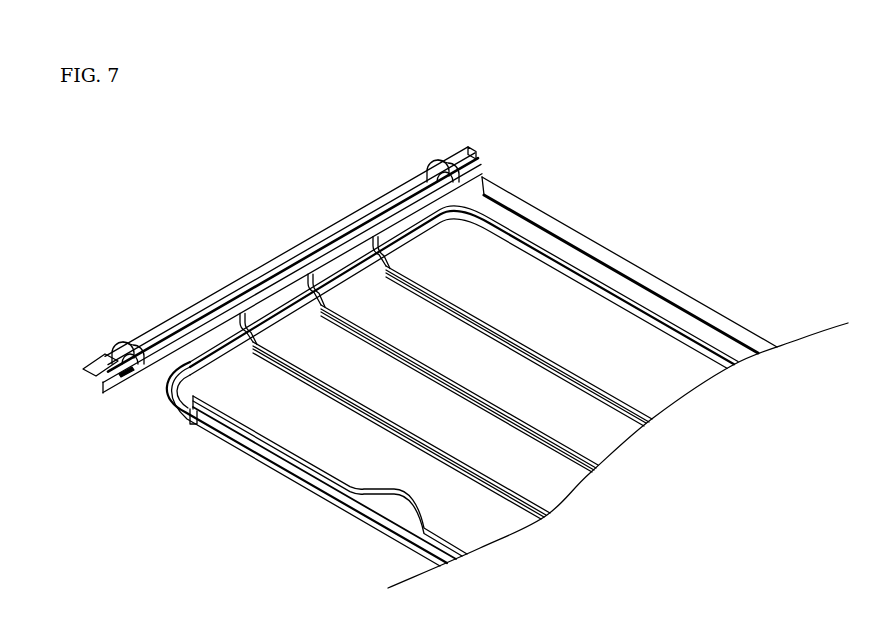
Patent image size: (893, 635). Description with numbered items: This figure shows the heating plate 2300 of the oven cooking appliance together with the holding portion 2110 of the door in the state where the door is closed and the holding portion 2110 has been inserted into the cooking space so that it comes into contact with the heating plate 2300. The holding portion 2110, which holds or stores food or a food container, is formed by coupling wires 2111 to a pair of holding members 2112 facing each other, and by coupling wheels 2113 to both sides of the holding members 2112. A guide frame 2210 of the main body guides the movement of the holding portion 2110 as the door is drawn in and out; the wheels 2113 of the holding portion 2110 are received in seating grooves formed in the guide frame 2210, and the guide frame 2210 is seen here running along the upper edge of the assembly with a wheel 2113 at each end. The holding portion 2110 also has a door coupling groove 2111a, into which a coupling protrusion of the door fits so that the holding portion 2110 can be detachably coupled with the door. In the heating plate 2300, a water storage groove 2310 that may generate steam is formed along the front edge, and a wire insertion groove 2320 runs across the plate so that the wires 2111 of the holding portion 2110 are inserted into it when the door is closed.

The holding portion 2110 is at (273, 288).
The wires 2111 is at (277, 306).
The door coupling groove 2111a is at (112, 393).
The holding members 2112 is at (243, 303).
The wheels 2113 is at (262, 262).
The guide frame 2210 is at (398, 196).
The heating plate 2300 is at (610, 325).
The water storage groove 2310 is at (388, 507).
The wire insertion groove 2320 is at (497, 323).